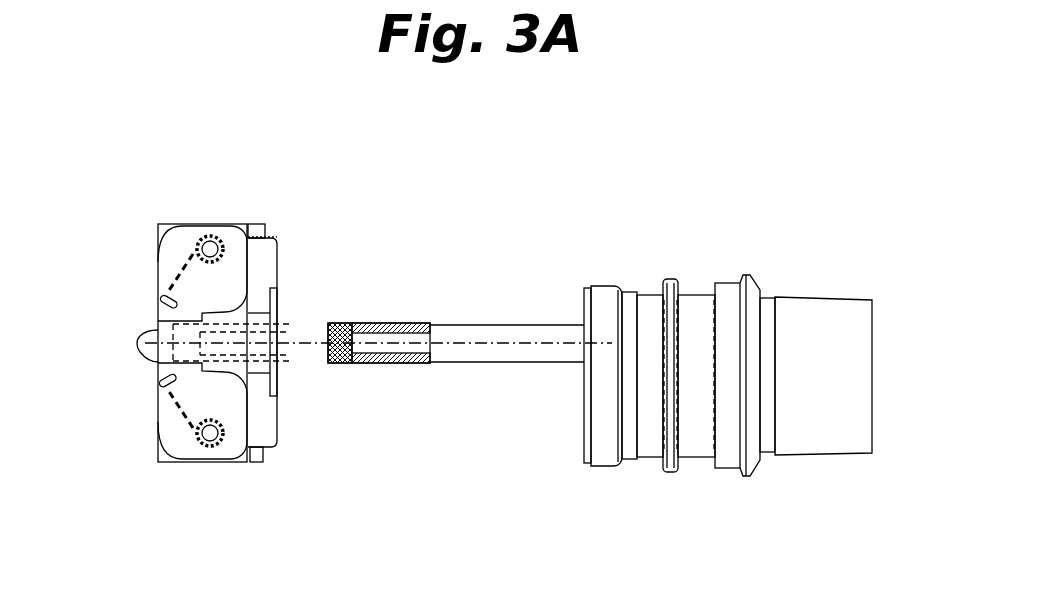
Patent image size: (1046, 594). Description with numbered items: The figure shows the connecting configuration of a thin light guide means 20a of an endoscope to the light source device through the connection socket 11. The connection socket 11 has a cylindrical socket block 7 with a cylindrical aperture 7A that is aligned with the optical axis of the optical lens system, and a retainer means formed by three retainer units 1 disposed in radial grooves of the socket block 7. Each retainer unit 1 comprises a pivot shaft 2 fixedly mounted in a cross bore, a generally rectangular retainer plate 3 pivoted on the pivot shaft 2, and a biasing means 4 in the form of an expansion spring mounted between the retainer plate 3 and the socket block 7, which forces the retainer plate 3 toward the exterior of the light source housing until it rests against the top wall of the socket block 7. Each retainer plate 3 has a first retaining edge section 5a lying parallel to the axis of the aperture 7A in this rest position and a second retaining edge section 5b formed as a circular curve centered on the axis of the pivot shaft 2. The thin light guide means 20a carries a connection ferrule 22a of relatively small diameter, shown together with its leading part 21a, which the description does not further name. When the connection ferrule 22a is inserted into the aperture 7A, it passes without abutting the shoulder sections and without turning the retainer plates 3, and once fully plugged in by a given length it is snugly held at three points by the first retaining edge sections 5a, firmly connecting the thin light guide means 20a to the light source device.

The retainer unit 1 is at (143, 228).
The pivot shaft 2 is at (213, 243).
The retainer plate 3 is at (173, 243).
The biasing means 4 is at (152, 256).
The first retaining edge section 5a is at (145, 343).
The second retaining edge section 5b is at (273, 308).
The cylindrical socket block 7 is at (278, 432).
The cylindrical aperture 7A is at (275, 372).
The connection socket 11 is at (295, 230).
The thin light guide means 20a is at (618, 272).
The plug ferrule 21a is at (390, 323).
The connection ferrule 22a is at (495, 323).